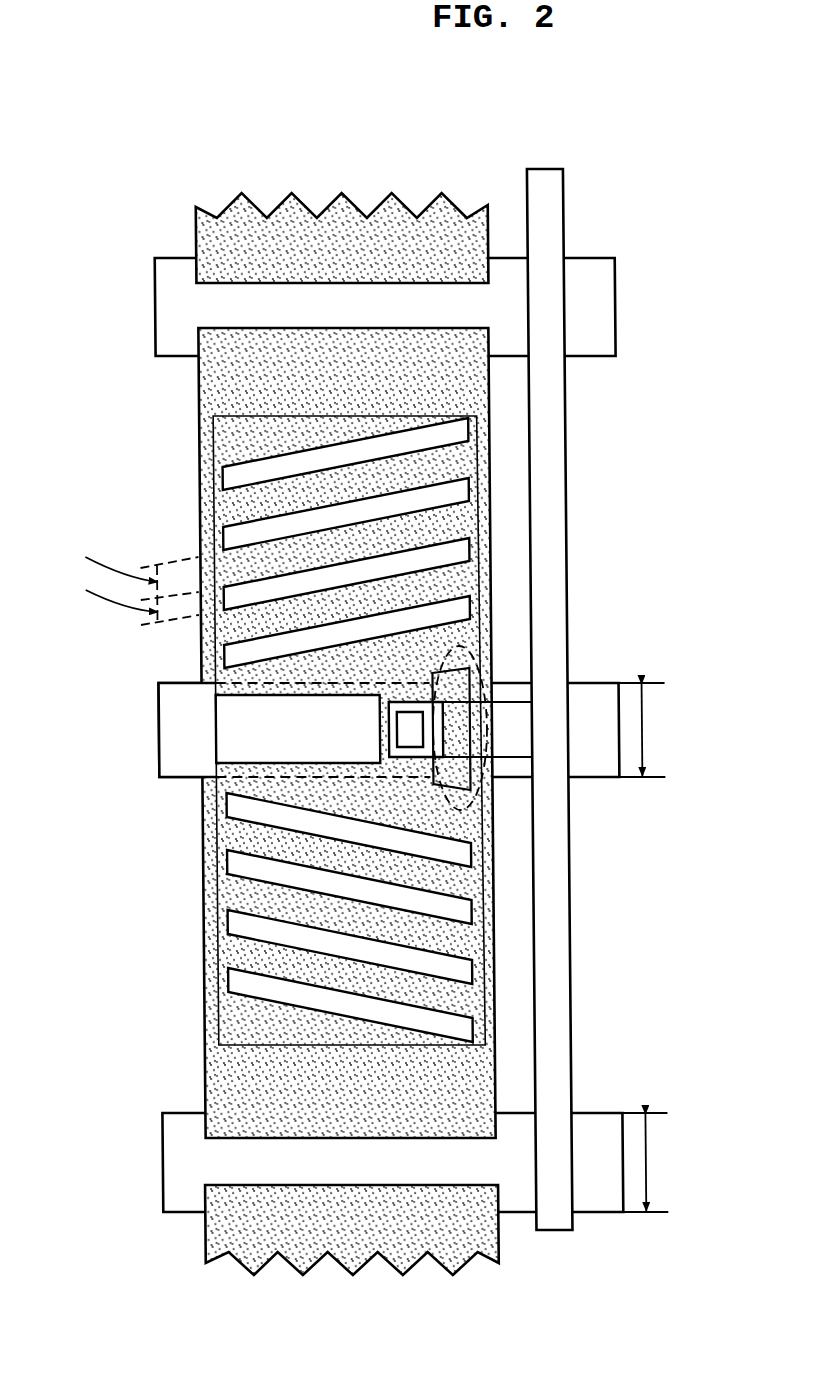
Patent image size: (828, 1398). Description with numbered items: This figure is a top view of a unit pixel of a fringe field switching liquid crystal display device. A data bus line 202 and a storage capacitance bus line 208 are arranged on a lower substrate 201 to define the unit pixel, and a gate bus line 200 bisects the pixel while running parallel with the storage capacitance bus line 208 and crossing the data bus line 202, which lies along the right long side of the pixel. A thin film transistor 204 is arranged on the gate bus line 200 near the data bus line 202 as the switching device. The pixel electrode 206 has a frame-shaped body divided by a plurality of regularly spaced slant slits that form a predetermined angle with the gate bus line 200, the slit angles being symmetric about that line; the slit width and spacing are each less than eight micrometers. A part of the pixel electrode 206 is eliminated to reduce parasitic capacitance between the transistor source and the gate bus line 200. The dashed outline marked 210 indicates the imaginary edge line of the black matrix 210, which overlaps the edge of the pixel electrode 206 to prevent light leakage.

The gate bus line 200 is at (591, 708).
The lower substrate 201 is at (392, 753).
The data bus line 202 is at (555, 503).
The thin film transistor 204 is at (471, 648).
The pixel electrode 206 is at (207, 488).
The storage capacitance bus line 208 is at (602, 307).
The black matrix 210 is at (202, 818).